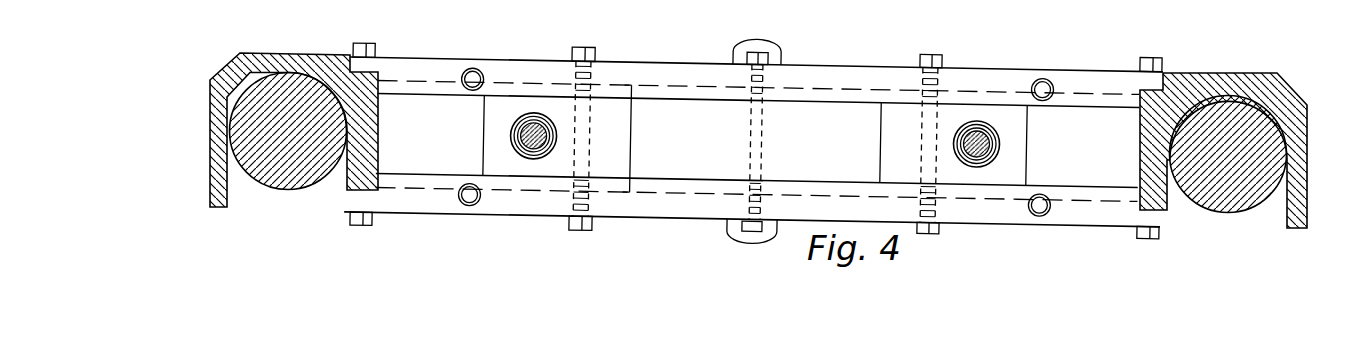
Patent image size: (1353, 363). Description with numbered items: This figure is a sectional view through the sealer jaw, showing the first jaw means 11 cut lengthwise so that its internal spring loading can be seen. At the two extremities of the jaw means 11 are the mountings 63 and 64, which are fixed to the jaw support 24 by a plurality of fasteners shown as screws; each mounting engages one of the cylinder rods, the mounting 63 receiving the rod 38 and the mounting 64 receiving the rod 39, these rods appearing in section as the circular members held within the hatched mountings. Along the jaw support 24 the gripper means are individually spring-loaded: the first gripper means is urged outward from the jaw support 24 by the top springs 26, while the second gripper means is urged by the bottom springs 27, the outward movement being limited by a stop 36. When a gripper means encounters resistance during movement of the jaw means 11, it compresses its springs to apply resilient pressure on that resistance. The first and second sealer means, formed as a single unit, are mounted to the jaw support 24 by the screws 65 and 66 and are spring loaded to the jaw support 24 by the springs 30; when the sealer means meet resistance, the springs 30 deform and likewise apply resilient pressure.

The first jaw means 11 is at (754, 123).
The jaw support 24 is at (800, 57).
The top springs 26 is at (477, 66).
The bottom springs 27 is at (472, 204).
The springs 30 is at (538, 156).
The stop 36 is at (735, 43).
The rod 38 is at (300, 189).
The rod 39 is at (1240, 212).
The mounting 63 is at (288, 53).
The mounting 64 is at (1215, 73).
The screw 65 is at (537, 109).
The screw 66 is at (980, 146).